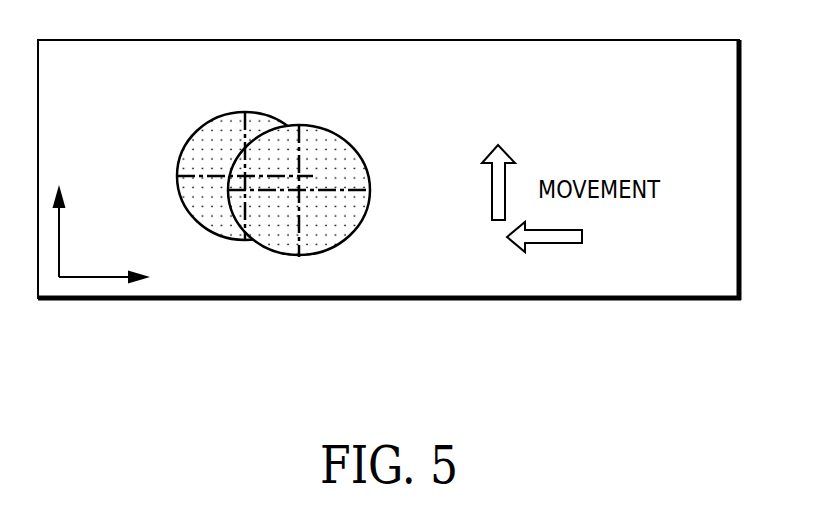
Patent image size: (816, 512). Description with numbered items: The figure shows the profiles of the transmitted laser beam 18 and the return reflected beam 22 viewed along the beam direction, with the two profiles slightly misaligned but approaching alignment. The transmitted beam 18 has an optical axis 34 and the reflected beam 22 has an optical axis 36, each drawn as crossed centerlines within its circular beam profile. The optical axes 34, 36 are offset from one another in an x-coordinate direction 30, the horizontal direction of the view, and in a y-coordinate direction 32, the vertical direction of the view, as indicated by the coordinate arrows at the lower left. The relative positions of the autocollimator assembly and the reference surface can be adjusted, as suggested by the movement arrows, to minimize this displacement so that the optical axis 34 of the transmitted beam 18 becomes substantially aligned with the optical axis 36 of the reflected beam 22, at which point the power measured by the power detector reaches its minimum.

The transmitted laser beam 18 is at (180, 120).
The return reflected beam 22 is at (348, 145).
The optical axis of transmitted beam 34 is at (240, 163).
The optical axis of reflected beam 36 is at (299, 190).
The y-coordinate direction 32 is at (82, 172).
The x-coordinate direction 30 is at (143, 256).